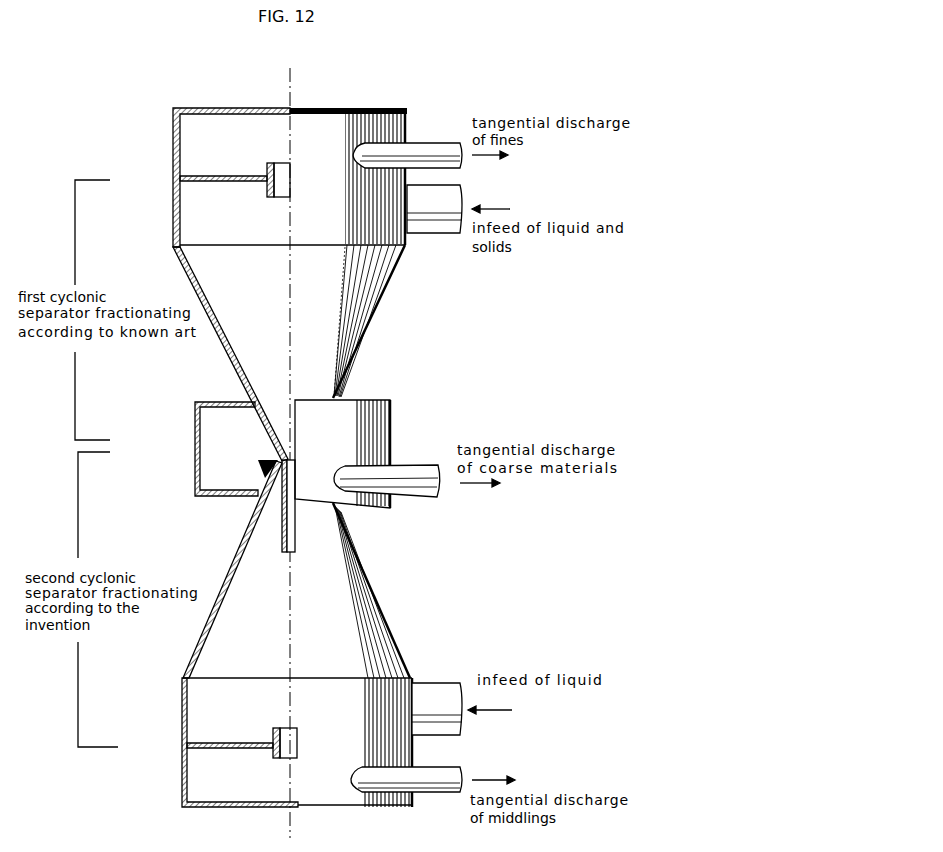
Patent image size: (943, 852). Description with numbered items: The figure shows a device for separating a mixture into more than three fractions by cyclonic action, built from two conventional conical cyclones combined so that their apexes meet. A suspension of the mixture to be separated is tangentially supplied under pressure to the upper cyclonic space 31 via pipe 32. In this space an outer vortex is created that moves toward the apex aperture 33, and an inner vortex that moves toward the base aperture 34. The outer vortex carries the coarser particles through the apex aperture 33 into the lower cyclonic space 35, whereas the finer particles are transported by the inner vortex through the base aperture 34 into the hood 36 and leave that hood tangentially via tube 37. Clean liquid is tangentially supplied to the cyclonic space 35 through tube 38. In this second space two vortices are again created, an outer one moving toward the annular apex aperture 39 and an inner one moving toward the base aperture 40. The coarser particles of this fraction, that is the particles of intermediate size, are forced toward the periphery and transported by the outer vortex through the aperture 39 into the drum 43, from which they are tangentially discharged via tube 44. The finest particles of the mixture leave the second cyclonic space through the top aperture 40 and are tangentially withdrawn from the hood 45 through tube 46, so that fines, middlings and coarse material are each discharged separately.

The cyclonic space 31 is at (364, 338).
The pipe 32 is at (434, 220).
The apex aperture 33 is at (292, 460).
The base aperture 34 is at (280, 198).
The cyclonic space 35 is at (377, 601).
The hood 36 is at (247, 110).
The tube 37 is at (440, 141).
The tube 38 is at (437, 679).
The annular apex aperture 39 is at (274, 460).
The base aperture 40 is at (290, 728).
The drum 43 is at (195, 446).
The tube 44 is at (405, 466).
The hood 45 is at (182, 773).
The tube 46 is at (437, 768).